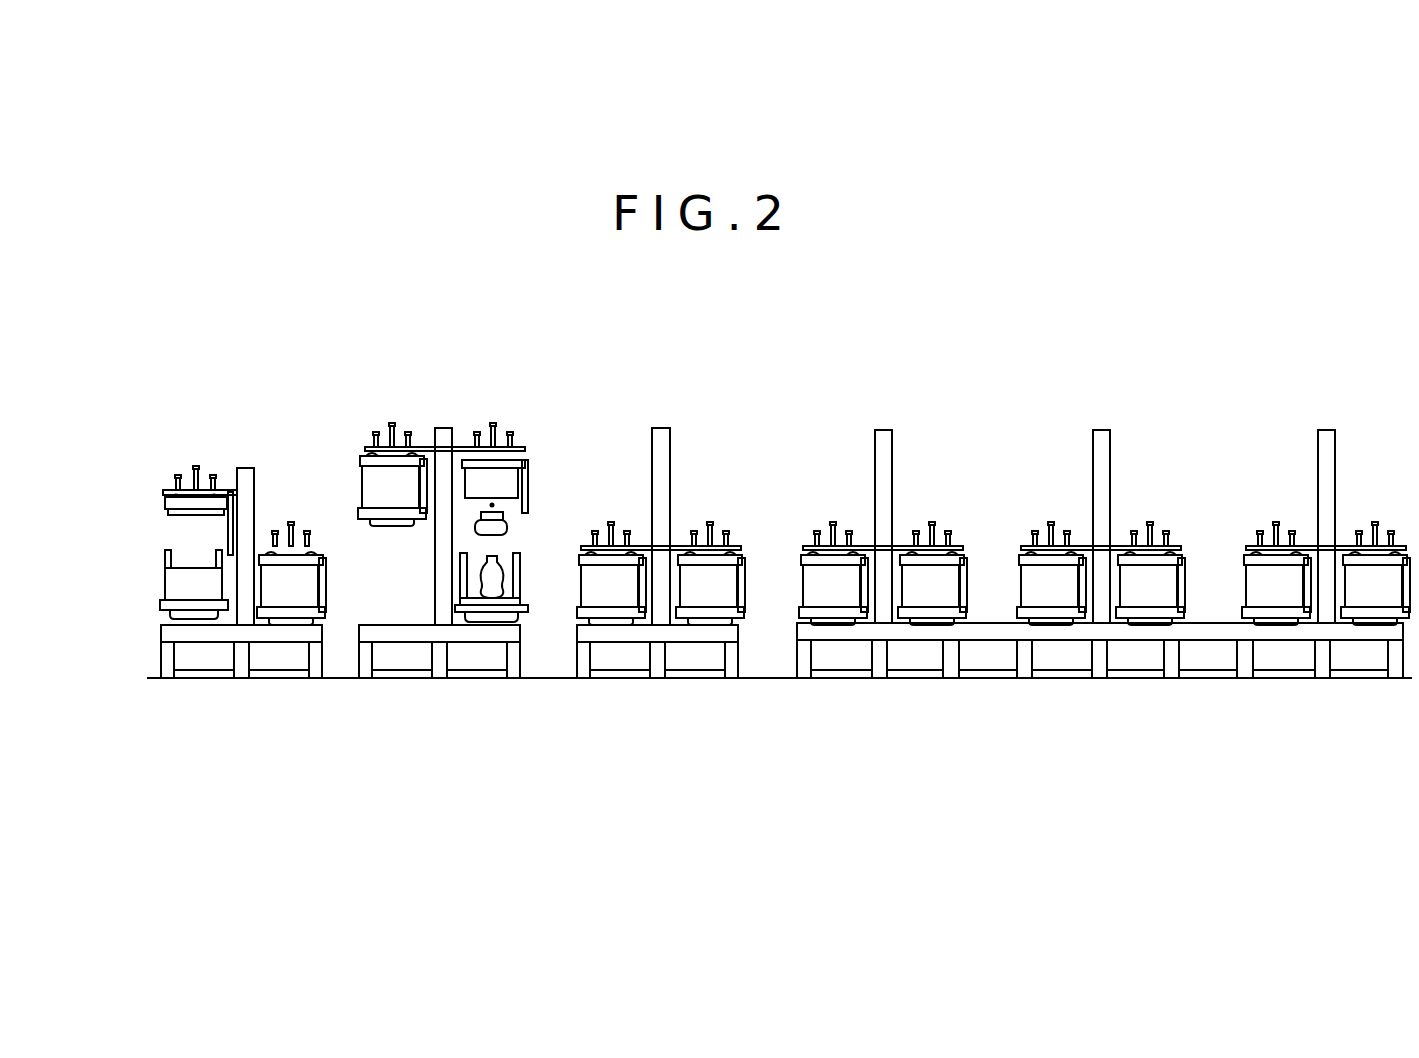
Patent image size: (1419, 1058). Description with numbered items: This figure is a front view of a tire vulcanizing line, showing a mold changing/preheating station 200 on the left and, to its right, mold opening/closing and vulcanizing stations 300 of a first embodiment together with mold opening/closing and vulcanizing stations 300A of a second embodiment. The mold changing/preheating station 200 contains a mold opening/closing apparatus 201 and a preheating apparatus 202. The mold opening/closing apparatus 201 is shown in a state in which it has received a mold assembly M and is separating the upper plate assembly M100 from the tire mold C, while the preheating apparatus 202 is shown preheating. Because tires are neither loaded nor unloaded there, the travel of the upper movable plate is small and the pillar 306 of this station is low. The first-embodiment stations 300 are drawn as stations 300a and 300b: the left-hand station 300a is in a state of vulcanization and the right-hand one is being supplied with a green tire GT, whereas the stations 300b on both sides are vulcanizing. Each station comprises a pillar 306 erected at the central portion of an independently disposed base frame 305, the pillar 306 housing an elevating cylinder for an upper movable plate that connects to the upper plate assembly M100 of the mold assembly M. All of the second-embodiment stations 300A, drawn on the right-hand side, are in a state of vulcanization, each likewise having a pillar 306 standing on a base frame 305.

The mold changing/preheating station 200 is at (259, 452).
The mold opening/closing apparatus 201 is at (200, 465).
The preheating apparatus 202 is at (287, 552).
The upper plate assembly M100 is at (165, 503).
The mold assembly M is at (150, 552).
The tire mold C is at (162, 570).
The mold opening/closing and vulcanizing station 300 is at (560, 581).
The mold opening/closing and vulcanizing station 300a is at (448, 412).
The mold opening/closing and vulcanizing station 300b is at (659, 412).
The mold opening/closing and vulcanizing station 300A is at (1101, 621).
The base frame 305 is at (478, 632).
The pillar 306 is at (893, 462).
The green tire GT is at (512, 524).